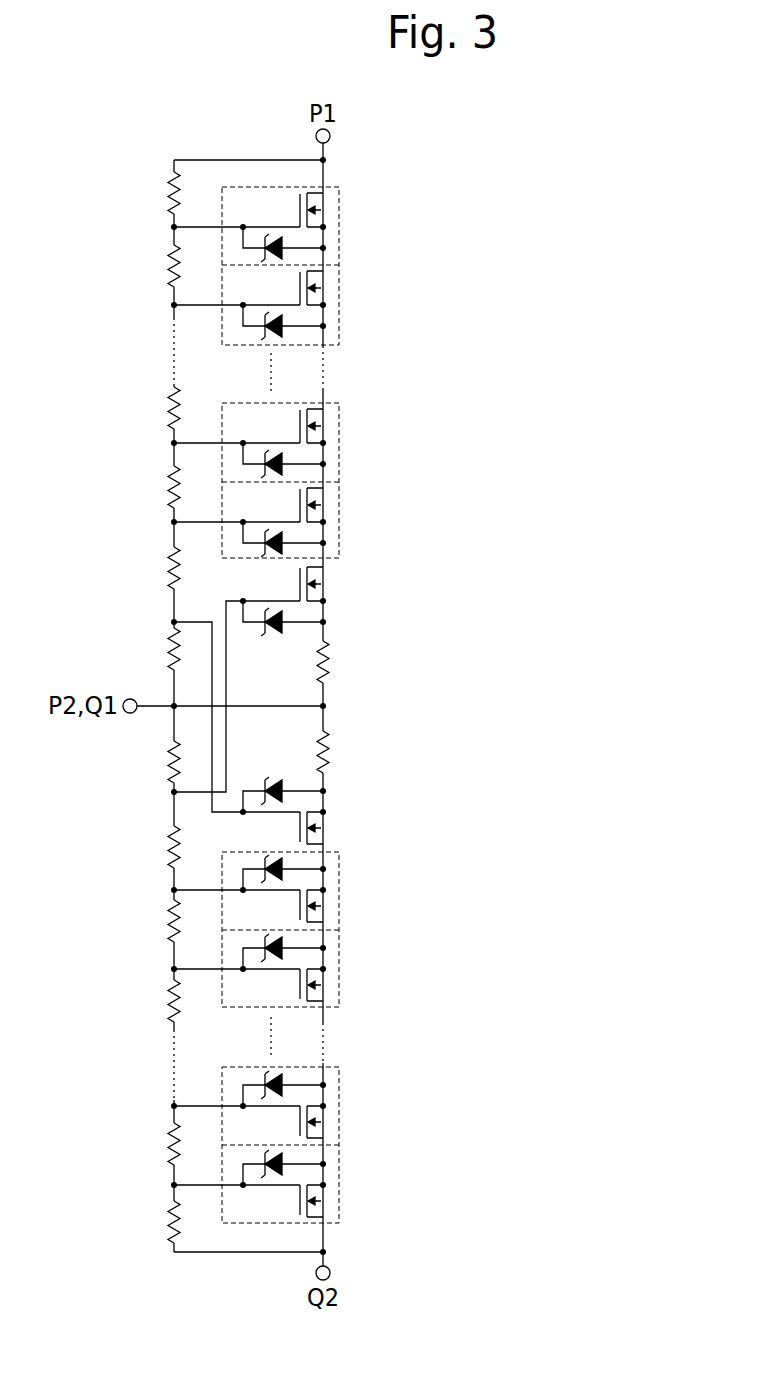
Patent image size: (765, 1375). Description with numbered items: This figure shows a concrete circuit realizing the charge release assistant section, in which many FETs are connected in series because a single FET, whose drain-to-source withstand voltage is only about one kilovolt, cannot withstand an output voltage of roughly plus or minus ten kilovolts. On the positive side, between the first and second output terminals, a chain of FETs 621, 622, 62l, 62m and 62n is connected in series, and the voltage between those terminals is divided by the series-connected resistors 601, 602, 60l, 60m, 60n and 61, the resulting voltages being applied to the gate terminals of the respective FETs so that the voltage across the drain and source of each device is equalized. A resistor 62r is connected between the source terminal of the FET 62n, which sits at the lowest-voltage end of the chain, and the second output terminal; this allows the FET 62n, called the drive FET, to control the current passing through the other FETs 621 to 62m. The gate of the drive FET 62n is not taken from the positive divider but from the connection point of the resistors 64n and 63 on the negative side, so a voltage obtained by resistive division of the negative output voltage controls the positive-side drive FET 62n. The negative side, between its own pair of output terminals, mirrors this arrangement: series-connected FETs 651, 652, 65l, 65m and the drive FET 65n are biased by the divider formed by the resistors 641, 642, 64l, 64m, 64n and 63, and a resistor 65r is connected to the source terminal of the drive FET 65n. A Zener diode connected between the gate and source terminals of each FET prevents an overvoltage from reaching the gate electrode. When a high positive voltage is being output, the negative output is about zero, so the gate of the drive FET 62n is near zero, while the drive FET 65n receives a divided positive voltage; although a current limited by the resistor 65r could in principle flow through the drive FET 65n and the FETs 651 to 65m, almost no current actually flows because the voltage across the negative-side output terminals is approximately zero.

The resistor 601 is at (148, 193).
The resistor 602 is at (148, 266).
The resistor 60l is at (148, 408).
The resistor 60m is at (148, 487).
The resistor 60n is at (148, 568).
The resistor 61 is at (152, 649).
The resistor 63 is at (152, 762).
The resistor 64n is at (148, 846).
The resistor 64m is at (148, 921).
The resistor 64l is at (148, 1001).
The resistor 642 is at (148, 1144).
The resistor 641 is at (148, 1222).
The resistor 62r is at (345, 664).
The resistor 65r is at (345, 752).
The FET 621 is at (324, 206).
The FET 622 is at (324, 284).
The FET 62l is at (324, 423).
The FET 62m is at (324, 501).
The drive FET 62n is at (324, 580).
The drive FET 65n is at (324, 838).
The FET 65m is at (324, 918).
The FET 65l is at (324, 998).
The FET 652 is at (324, 1130).
The FET 651 is at (324, 1210).